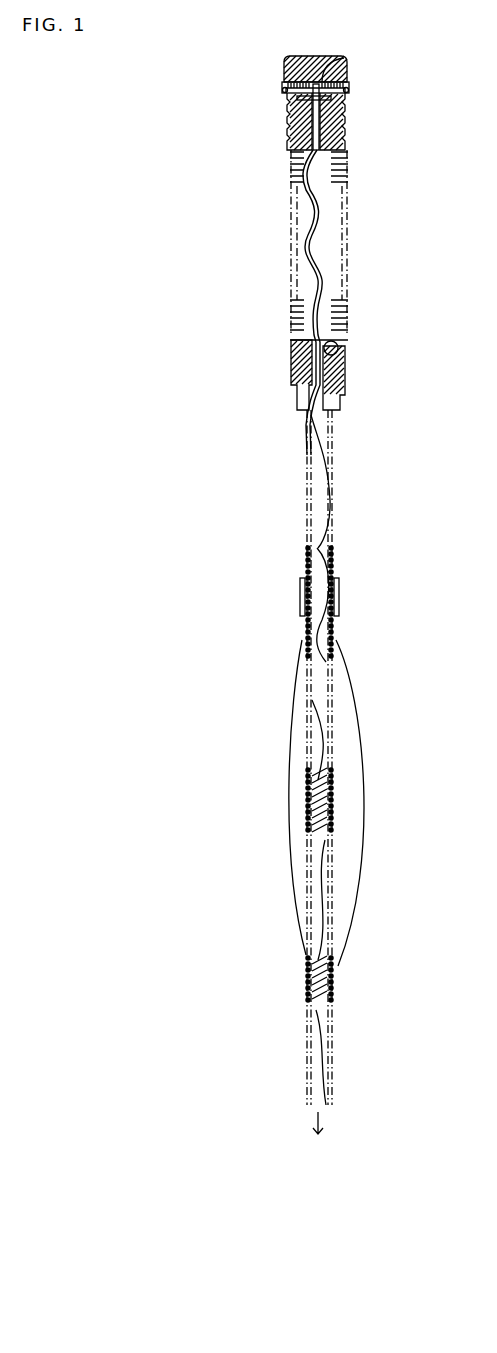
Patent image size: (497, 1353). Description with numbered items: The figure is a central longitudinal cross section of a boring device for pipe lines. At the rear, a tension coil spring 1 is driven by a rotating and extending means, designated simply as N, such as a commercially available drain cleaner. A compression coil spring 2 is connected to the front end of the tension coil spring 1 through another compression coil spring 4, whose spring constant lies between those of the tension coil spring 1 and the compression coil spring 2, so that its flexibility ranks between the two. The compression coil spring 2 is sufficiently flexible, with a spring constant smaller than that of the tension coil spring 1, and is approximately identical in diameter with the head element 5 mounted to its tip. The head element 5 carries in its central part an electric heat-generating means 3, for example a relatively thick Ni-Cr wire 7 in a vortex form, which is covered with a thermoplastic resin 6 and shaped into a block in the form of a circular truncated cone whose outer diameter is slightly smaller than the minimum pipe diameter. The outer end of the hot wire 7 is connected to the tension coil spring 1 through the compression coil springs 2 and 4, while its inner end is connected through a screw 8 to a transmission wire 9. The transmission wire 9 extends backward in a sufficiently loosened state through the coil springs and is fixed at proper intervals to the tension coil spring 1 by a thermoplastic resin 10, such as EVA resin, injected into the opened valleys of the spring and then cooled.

The tension coil spring 1 is at (310, 791).
The compression coil spring 2 is at (288, 320).
The electric heat-generating means 3 is at (285, 90).
The compression coil spring 4 is at (302, 425).
The head element 5 is at (282, 45).
The thermoplastic resin 6 is at (345, 68).
The Ni-Cr wire 7 is at (318, 76).
The screw 8 is at (342, 125).
The transmission wire 9 is at (312, 238).
The thermoplastic resin 10 is at (331, 798).